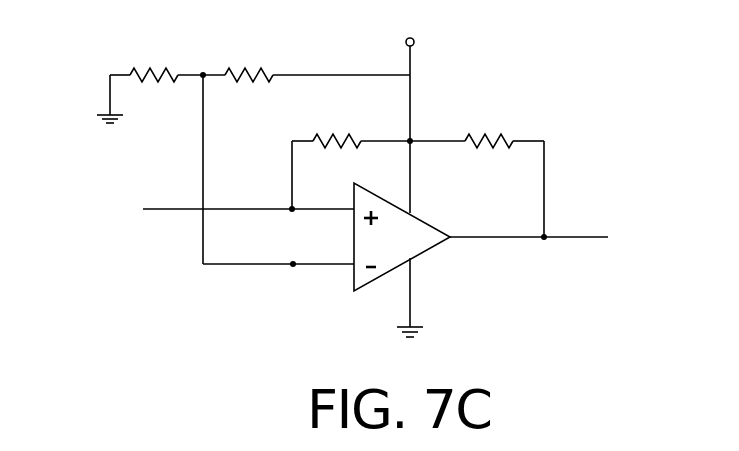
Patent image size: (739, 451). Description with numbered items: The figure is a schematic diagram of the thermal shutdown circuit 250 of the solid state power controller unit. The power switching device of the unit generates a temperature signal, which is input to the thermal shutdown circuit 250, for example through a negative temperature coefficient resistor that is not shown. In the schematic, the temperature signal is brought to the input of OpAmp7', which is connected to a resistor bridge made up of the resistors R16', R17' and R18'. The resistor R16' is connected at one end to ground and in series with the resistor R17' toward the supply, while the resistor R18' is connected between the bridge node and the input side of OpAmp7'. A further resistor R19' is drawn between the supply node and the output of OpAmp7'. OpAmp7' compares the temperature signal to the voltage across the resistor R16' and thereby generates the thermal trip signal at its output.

The thermal shutdown circuit 250 is at (51, 30).
The resistor R16' is at (154, 58).
The resistor R17' is at (249, 58).
The resistor R18' is at (337, 124).
The resistor R19' is at (493, 125).
The operational amplifier OpAmp7' is at (431, 237).